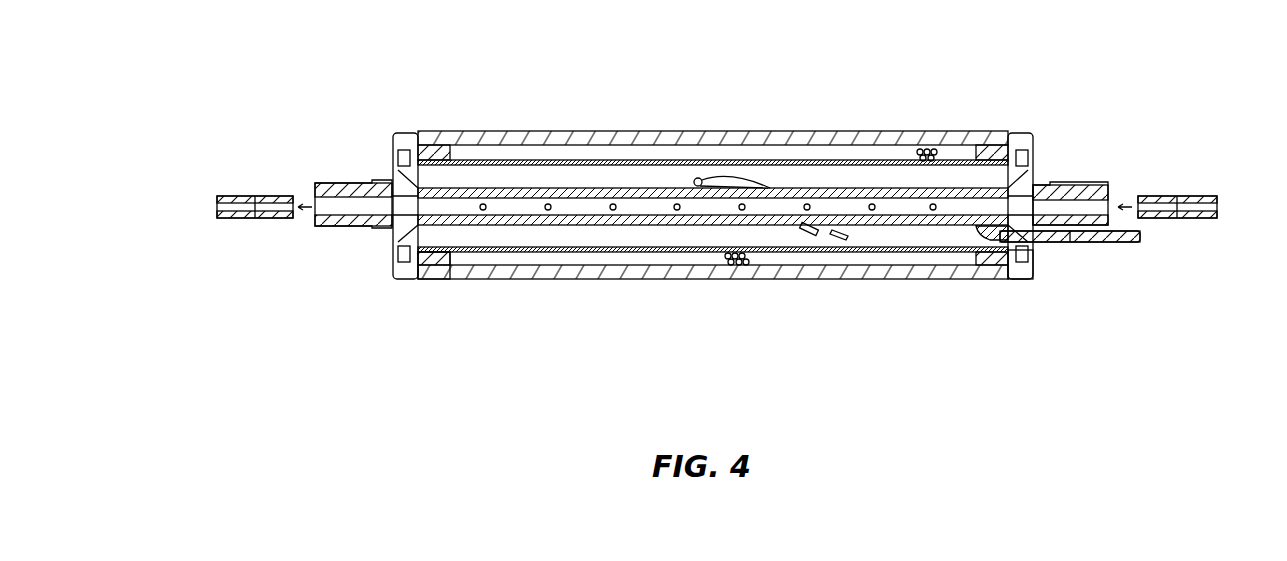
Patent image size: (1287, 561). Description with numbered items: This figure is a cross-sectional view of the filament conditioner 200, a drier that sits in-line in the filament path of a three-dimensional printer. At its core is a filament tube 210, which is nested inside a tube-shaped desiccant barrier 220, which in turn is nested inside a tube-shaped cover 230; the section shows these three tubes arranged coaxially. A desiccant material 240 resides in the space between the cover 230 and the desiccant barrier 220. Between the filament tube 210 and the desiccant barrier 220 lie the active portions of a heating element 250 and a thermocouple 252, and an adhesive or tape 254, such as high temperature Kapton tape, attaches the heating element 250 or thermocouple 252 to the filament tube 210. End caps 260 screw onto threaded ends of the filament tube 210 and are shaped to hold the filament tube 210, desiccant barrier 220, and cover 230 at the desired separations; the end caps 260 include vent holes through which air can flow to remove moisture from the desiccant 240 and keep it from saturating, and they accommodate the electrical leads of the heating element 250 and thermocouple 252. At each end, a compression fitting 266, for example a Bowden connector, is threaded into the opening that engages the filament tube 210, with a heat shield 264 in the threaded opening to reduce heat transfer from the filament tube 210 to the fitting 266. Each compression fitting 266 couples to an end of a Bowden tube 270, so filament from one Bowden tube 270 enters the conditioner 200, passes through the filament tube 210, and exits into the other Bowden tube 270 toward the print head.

The filament conditioner 200 is at (684, 404).
The filament tube 210 is at (645, 188).
The desiccant barrier 220 is at (833, 163).
The cover 230 is at (538, 131).
The desiccant material 240 is at (925, 150).
The heating element 250 is at (812, 233).
The thermocouple 252 is at (735, 180).
The adhesive or tape 254 is at (905, 232).
The end caps 260 is at (400, 133).
The heat shield 264 is at (433, 276).
The compression fittings 266 is at (352, 183).
The Bowden tube 270 is at (245, 195).